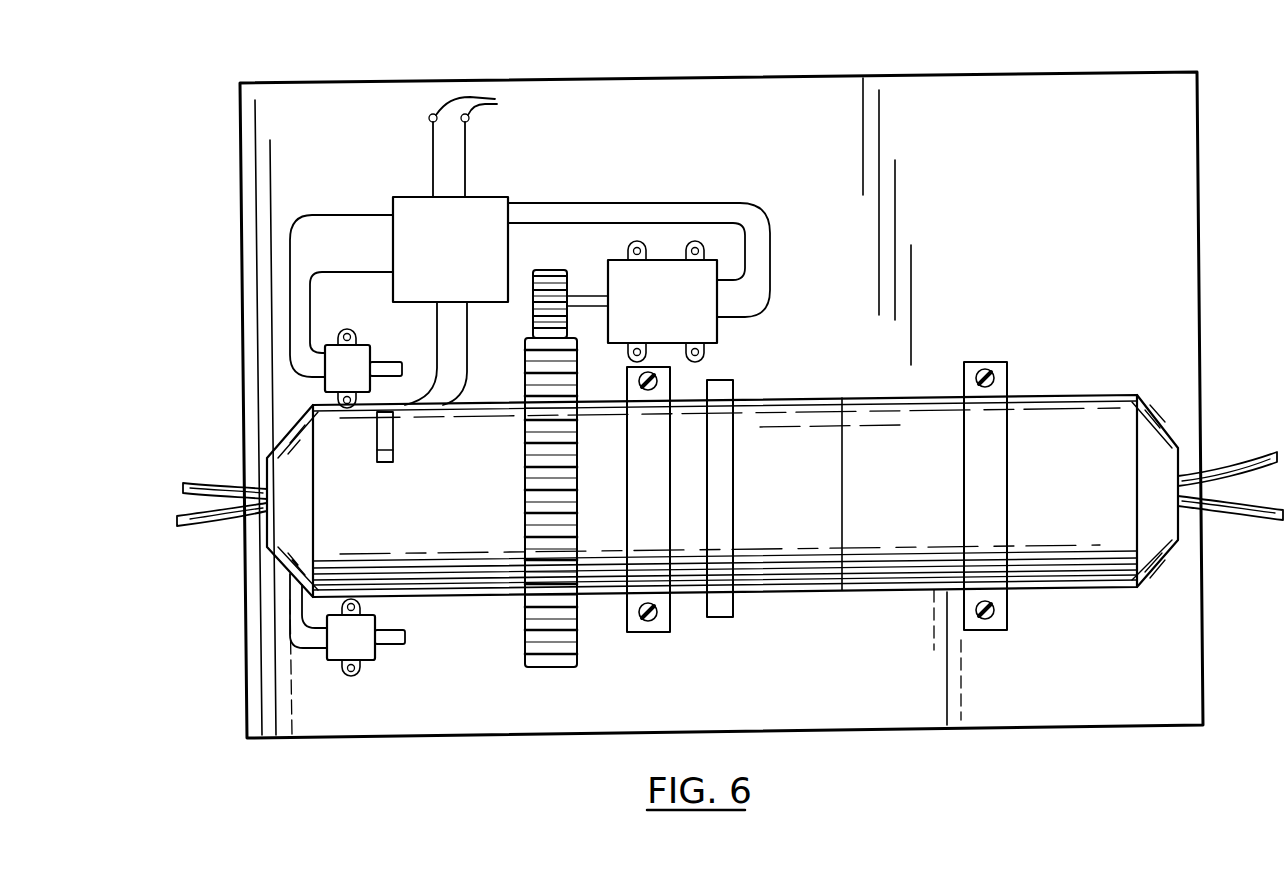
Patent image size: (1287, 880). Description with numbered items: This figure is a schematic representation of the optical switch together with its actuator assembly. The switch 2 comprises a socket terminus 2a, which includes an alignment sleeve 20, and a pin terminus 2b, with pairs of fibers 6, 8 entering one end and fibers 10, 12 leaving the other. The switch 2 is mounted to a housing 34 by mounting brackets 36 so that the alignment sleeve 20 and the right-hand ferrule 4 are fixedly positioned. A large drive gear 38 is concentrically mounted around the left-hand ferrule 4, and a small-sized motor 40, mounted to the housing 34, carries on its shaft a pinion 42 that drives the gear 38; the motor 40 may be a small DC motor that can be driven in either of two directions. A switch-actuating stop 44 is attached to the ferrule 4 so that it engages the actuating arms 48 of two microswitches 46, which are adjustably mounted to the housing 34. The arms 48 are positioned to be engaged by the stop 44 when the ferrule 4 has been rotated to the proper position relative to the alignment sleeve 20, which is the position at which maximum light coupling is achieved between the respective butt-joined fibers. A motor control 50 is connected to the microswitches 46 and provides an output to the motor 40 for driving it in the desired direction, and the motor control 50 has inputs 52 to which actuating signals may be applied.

The switch 2 is at (823, 387).
The socket terminus 2a is at (848, 612).
The pin terminus 2b is at (448, 645).
The ferrule 4 is at (455, 598).
The fiber 6 is at (221, 482).
The fiber 8 is at (226, 516).
The fiber 10 is at (1247, 458).
The fiber 12 is at (1230, 510).
The alignment sleeve 20 is at (777, 595).
The housing 34 is at (1054, 72).
The mounting bracket 36 is at (655, 632).
The drive gear 38 is at (575, 667).
The motor 40 is at (675, 292).
The pinion 42 is at (548, 270).
The switch-actuating stop 44 is at (393, 440).
The microswitch 46 is at (360, 381).
The actuating arm 48 is at (385, 362).
The motor control 50 is at (464, 293).
The input 52 is at (495, 101).